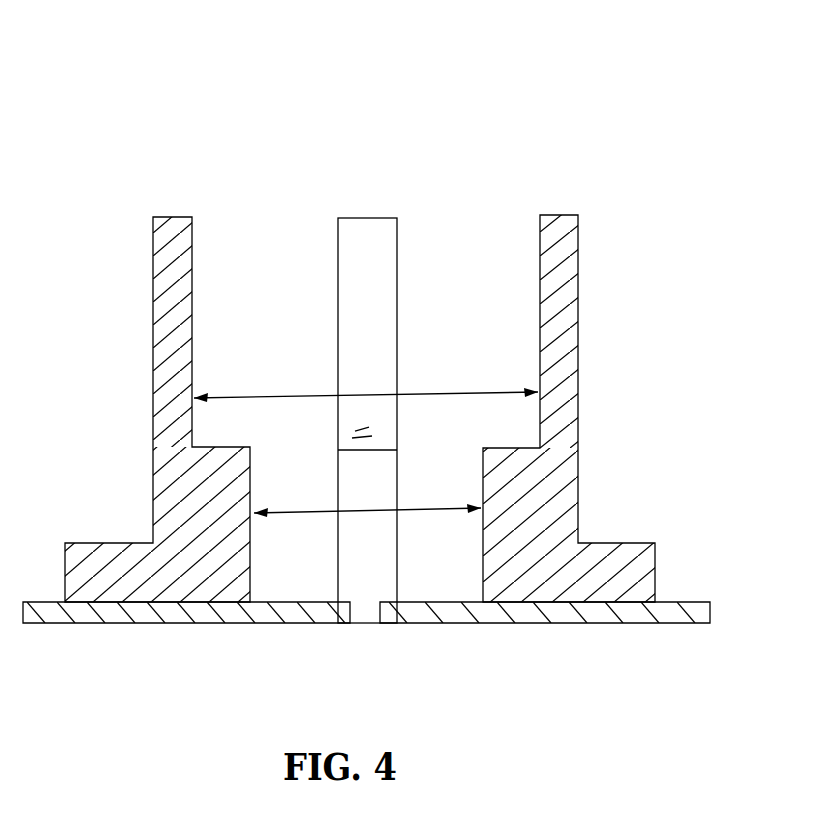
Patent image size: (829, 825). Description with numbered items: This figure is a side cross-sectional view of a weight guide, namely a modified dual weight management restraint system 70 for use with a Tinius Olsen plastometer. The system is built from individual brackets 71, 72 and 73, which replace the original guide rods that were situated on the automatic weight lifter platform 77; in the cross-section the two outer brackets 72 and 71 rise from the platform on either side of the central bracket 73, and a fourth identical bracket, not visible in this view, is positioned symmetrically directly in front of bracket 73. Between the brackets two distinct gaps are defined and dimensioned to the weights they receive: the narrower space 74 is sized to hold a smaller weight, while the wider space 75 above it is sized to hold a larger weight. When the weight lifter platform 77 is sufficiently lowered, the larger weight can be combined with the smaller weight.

The modified dual weight management restraint system 70 is at (560, 98).
The bracket 71 is at (577, 373).
The bracket 72 is at (153, 343).
The bracket 73 is at (371, 220).
The space 74 is at (428, 513).
The space 75 is at (280, 396).
The automatic weight lifter platform 77 is at (693, 612).